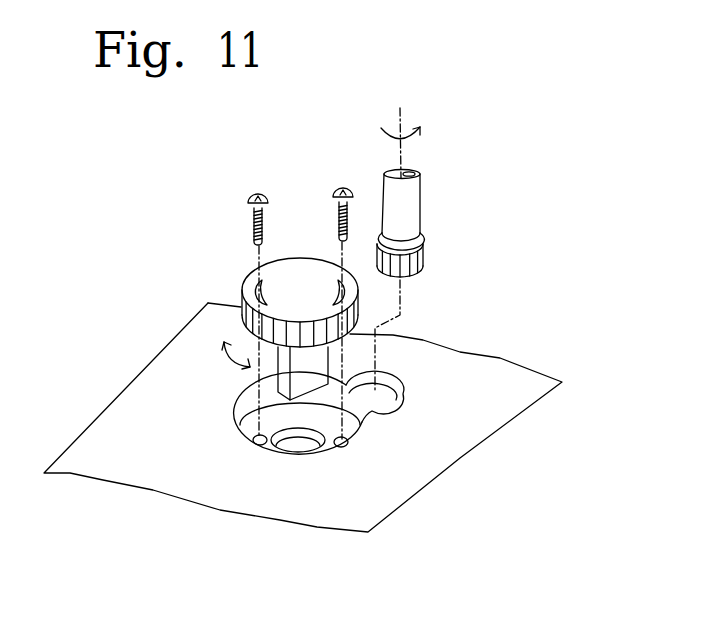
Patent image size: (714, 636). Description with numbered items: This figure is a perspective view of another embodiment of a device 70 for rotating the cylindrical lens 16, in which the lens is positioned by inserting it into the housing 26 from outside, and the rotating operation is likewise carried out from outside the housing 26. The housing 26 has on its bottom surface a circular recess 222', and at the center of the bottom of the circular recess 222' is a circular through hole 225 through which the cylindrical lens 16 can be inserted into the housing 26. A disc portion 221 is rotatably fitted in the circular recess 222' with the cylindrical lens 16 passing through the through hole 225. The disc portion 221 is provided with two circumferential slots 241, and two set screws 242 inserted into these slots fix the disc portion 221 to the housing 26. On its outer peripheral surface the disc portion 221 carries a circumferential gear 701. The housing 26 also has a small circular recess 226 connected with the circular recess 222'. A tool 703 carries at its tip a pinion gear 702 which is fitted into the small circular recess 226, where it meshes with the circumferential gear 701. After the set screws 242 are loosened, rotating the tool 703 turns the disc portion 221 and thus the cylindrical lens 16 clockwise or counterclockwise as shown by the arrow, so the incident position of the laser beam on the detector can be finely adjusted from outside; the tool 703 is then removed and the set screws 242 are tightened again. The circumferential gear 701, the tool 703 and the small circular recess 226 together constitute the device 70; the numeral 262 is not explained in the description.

The device for rotating the cylindrical lens 70 is at (428, 181).
The tool 703 is at (410, 217).
The pinion gear 702 is at (424, 260).
The engaging tip of tool 262 is at (410, 279).
The disc portion 221 is at (299, 278).
The circumferential gear 701 is at (242, 303).
The circumferential slots 241 is at (250, 293).
The set screws 242 is at (252, 222).
The housing 26 is at (167, 363).
The cylindrical lens 16 is at (240, 394).
The circular recess 222' is at (280, 487).
The circular through hole 225 is at (301, 437).
The small circular recess 226 is at (390, 392).